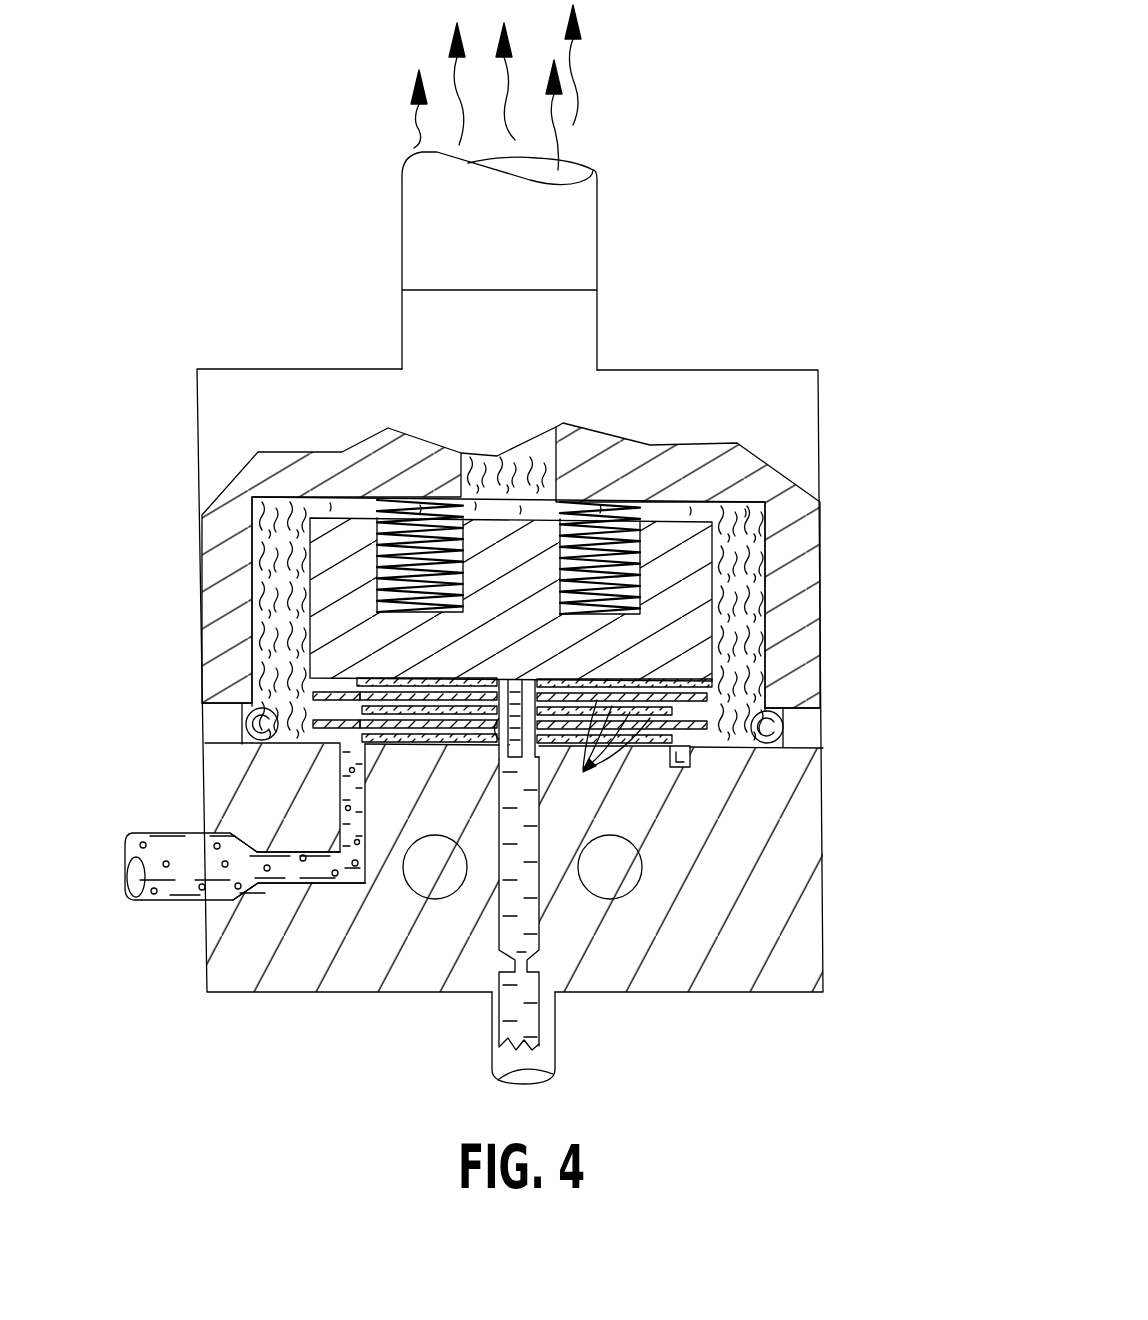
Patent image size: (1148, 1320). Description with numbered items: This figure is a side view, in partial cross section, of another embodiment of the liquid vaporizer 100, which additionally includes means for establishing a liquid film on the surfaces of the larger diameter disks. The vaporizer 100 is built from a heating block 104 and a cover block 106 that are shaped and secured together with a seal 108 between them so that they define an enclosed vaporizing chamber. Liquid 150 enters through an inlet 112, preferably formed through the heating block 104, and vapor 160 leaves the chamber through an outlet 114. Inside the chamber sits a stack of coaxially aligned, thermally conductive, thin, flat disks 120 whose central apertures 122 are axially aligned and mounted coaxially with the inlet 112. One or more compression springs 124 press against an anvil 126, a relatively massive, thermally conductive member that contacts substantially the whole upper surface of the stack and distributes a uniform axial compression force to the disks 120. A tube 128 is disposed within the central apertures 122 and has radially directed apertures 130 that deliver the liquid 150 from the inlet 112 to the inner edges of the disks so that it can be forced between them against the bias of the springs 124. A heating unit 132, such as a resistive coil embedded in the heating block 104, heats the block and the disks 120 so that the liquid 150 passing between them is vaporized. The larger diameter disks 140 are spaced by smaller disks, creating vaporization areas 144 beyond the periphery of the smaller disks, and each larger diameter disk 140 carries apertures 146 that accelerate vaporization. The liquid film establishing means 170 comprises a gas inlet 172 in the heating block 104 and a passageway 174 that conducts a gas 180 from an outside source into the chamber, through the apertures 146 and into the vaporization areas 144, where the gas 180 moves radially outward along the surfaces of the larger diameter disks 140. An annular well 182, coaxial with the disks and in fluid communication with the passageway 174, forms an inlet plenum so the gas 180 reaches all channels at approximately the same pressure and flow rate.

The liquid vaporizer 100 is at (802, 133).
The heating block 104 is at (808, 905).
The cover block 106 is at (803, 424).
The seal 108 is at (808, 722).
The inlet 112 is at (492, 1070).
The outlet 114 is at (421, 206).
The disks 120 is at (600, 757).
The central apertures 122 is at (506, 678).
The compression springs 124 is at (397, 498).
The anvil 126 is at (672, 528).
The tube 128 is at (495, 757).
The radially directed apertures 130 is at (497, 748).
The heating unit 132 is at (620, 858).
The larger diameter disks 140 is at (440, 676).
The vaporization areas 144 is at (318, 710).
The apertures 146 is at (350, 680).
The liquid 150 is at (537, 1015).
The vapor 160 is at (592, 95).
The liquid film establishing means 170 is at (128, 818).
The gas inlet 172 is at (168, 893).
The passageway 174 is at (313, 885).
The gas 180 is at (195, 848).
The annular well 182 is at (683, 768).